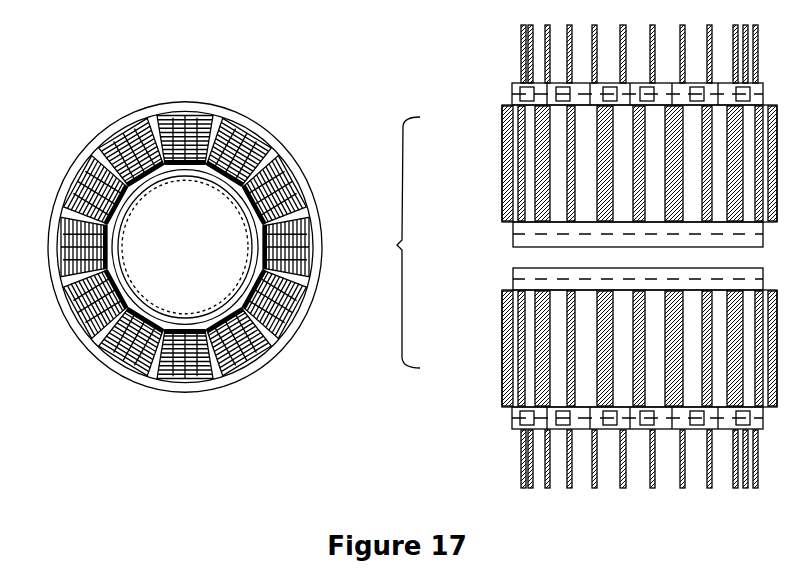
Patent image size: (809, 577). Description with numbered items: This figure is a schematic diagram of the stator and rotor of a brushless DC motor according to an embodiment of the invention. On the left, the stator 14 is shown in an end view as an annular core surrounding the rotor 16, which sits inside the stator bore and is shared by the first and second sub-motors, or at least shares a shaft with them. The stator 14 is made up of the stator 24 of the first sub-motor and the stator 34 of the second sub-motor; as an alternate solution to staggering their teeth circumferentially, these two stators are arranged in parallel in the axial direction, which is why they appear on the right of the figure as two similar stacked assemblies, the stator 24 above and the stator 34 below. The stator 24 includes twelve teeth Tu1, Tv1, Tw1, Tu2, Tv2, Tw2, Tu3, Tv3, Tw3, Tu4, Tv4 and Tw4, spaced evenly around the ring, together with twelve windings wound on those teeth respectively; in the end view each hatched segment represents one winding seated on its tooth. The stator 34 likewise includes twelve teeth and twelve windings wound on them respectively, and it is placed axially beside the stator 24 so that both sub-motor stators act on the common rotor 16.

The stator 14 is at (326, 292).
The rotor 16 is at (185, 247).
The stator of the first sub-motor 24 is at (482, 143).
The stator of the second sub-motor 34 is at (488, 394).
The tooth Tu1 is at (185, 118).
The tooth Tv1 is at (239, 146).
The tooth Tw1 is at (288, 194).
The tooth Tu2 is at (306, 246).
The tooth Tv2 is at (288, 303).
The tooth Tw2 is at (241, 351).
The tooth Tu3 is at (185, 372).
The tooth Tv3 is at (128, 351).
The tooth Tw3 is at (82, 303).
The tooth Tu4 is at (62, 246).
The tooth Tv4 is at (81, 194).
The tooth Tw4 is at (132, 142).